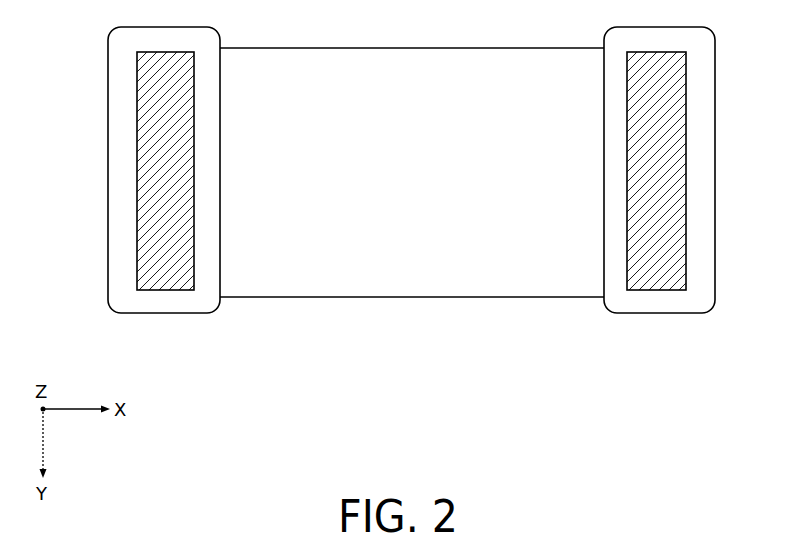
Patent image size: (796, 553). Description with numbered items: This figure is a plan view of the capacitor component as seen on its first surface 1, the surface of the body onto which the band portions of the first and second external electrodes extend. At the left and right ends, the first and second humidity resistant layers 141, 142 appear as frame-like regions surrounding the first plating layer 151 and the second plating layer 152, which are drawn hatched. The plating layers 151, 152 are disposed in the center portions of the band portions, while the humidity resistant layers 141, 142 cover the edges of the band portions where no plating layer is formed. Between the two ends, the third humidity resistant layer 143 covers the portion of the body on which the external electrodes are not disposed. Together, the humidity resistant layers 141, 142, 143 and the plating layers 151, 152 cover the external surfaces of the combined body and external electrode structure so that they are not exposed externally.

The first surface 1 is at (419, 184).
The first humidity resistant layer 141 is at (125, 300).
The second humidity resistant layer 142 is at (698, 300).
The third humidity resistant layer 143 is at (478, 282).
The first plating layer 151 is at (165, 279).
The second plating layer 152 is at (660, 280).